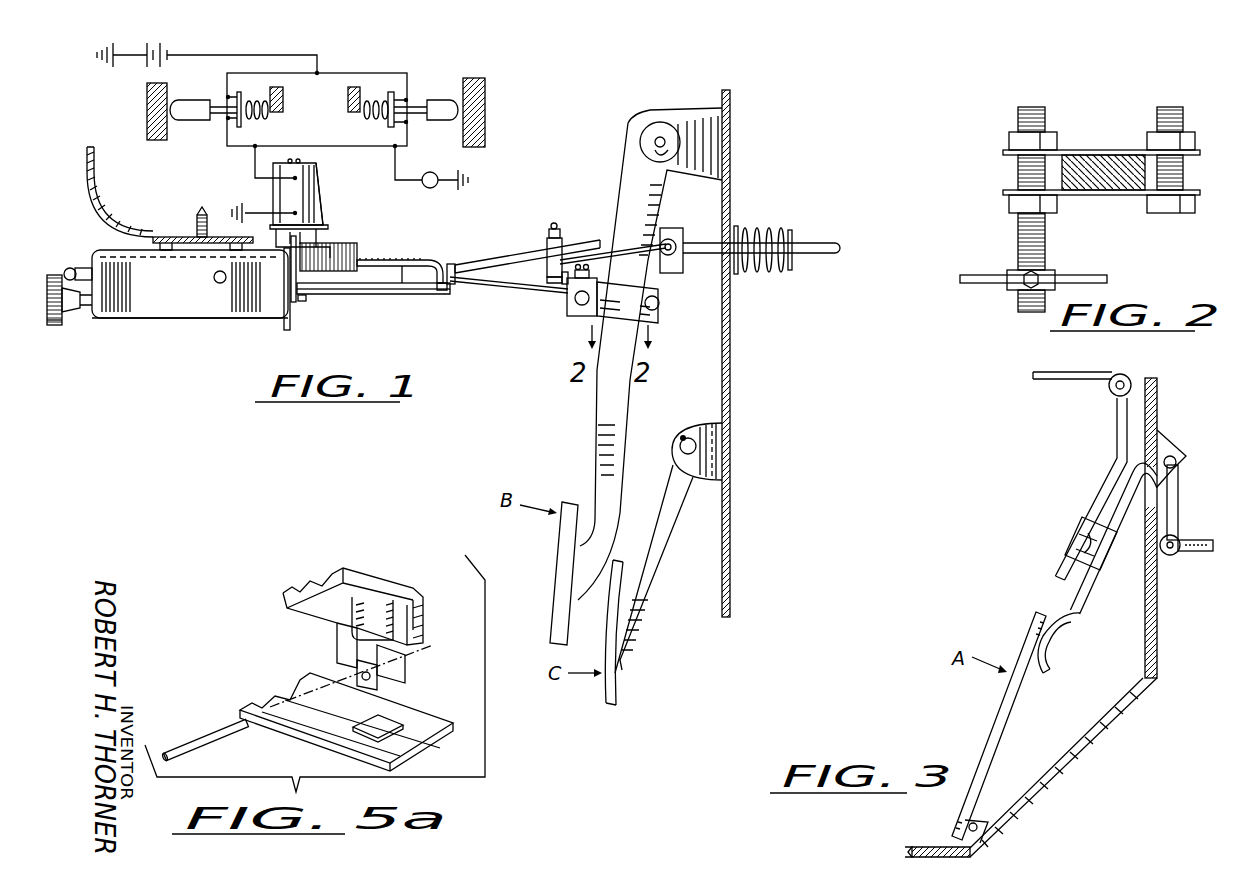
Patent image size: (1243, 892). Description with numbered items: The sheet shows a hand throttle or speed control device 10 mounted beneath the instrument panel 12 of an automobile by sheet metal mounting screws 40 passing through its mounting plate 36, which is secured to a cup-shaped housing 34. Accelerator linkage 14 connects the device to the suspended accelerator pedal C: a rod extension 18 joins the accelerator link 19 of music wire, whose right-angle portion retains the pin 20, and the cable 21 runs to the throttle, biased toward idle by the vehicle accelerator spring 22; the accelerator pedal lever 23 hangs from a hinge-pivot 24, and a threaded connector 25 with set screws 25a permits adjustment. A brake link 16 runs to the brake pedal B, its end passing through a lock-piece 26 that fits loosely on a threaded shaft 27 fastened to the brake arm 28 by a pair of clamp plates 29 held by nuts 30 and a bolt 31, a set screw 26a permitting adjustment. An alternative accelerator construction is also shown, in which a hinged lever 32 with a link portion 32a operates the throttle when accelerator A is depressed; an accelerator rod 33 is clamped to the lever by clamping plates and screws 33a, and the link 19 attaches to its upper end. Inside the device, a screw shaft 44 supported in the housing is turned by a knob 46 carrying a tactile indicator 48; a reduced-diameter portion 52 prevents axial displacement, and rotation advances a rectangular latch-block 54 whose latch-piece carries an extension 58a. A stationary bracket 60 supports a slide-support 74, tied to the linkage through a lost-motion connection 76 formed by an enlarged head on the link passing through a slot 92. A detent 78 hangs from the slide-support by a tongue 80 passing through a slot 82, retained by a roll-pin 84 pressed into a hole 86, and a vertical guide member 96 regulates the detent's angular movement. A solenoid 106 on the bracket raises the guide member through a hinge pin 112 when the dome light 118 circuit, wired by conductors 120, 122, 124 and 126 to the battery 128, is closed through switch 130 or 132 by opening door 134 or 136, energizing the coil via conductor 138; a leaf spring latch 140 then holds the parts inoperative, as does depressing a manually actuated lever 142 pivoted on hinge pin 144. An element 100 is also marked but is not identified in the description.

In FIG. 1, the speed control device 10 is at (124, 319).
In FIG. 1, the instrument panel 12 is at (85, 162).
In FIG. 1, the accelerator linkage 14 is at (492, 254).
In FIG. 1, the brake link 16 is at (480, 283).
In FIG. 2, the brake link 16 is at (985, 275).
In FIG. 1, the rod extension 18 is at (462, 265).
In FIG. 1, the accelerator link 19 is at (626, 252).
In FIG. 3, the accelerator link 19 is at (1078, 378).
In FIG. 1, the pin 20 is at (670, 238).
In FIG. 1, the cable 21 is at (815, 245).
In FIG. 1, the accelerator spring 22 is at (750, 228).
In FIG. 1, the accelerator pedal lever 23 is at (655, 543).
In FIG. 1, the hinge-pivot 24 is at (700, 445).
In FIG. 1, the threaded connector 25 is at (555, 236).
In FIG. 1, the set screws 25a is at (550, 228).
In FIG. 1, the lock-piece 26 is at (570, 300).
In FIG. 2, the lock-piece 26 is at (1010, 285).
In FIG. 1, the set screw 26a is at (566, 275).
In FIG. 2, the set screw 26a is at (1045, 275).
In FIG. 1, the threaded shaft 27 is at (575, 285).
In FIG. 2, the threaded shaft 27 is at (1020, 232).
In FIG. 1, the brake arm 28 is at (610, 413).
In FIG. 2, the brake arm 28 is at (1085, 155).
In FIG. 1, the clamp plates 29 is at (615, 306).
In FIG. 2, the clamp plates 29 is at (1005, 190).
In FIG. 2, the nuts 30 is at (1018, 138).
In FIG. 1, the bolt 31 is at (659, 303).
In FIG. 2, the bolt 31 is at (1170, 107).
In FIG. 3, the hinged lever 32 is at (1075, 605).
In FIG. 3, the link portion 32a is at (1200, 552).
In FIG. 3, the accelerator rod 33 is at (1117, 433).
In FIG. 3, the clamping plates and screws 33a is at (1073, 536).
In FIG. 1, the cup-shaped housing 34 is at (145, 290).
In FIG. 1, the mounting plate 36 is at (158, 237).
In FIG. 1, the mounting screws 40 is at (200, 215).
In FIG. 1, the screw shaft 44 is at (80, 310).
In FIG. 1, the knob 46 is at (54, 322).
In FIG. 1, the tactile indicator 48 is at (52, 275).
In FIG. 1, the reduced-diameter shaft portion 52 is at (306, 298).
In FIG. 1, the latch-block 54 is at (270, 318).
In FIG. 1, the latch-piece extension 58a is at (355, 290).
In FIG. 1, the stationary bracket 60 is at (335, 228).
In FIG. 1, the slide-support 74 is at (370, 262).
In FIG. 5a, the slide-support 74 is at (370, 585).
In FIG. 1, the lost-motion connection 76 is at (450, 264).
In FIG. 1, the detent 78 is at (412, 294).
In FIG. 5a, the detent 78 is at (290, 690).
In FIG. 1, the tongue 80 is at (441, 290).
In FIG. 5a, the tongue 80 is at (408, 670).
In FIG. 5a, the slot 82 is at (395, 722).
In FIG. 5a, the roll-pin 84 is at (218, 735).
In FIG. 5a, the hole 86 is at (378, 676).
In FIG. 5a, the slot 92 is at (395, 615).
In FIG. 1, the guide member 96 is at (290, 328).
In FIG. 1, the block 100 is at (332, 250).
In FIG. 1, the solenoid 106 is at (268, 195).
In FIG. 1, the hinge pin 112 is at (291, 270).
In FIG. 1, the dome light 118 is at (437, 175).
In FIG. 1, the conductor 120 is at (400, 160).
In FIG. 1, the conductor 122 is at (328, 148).
In FIG. 1, the conductor 124 is at (372, 73).
In FIG. 1, the conductor 126 is at (297, 55).
In FIG. 1, the battery 128 is at (147, 63).
In FIG. 1, the switch 130 is at (228, 97).
In FIG. 1, the switch 132 is at (408, 90).
In FIG. 1, the door 134 is at (147, 105).
In FIG. 1, the door 136 is at (485, 100).
In FIG. 1, the conductor 138 is at (255, 160).
In FIG. 1, the leaf spring latch 140 is at (326, 208).
In FIG. 1, the manually actuated lever 142 is at (78, 268).
In FIG. 1, the hinge pin 144 is at (220, 283).